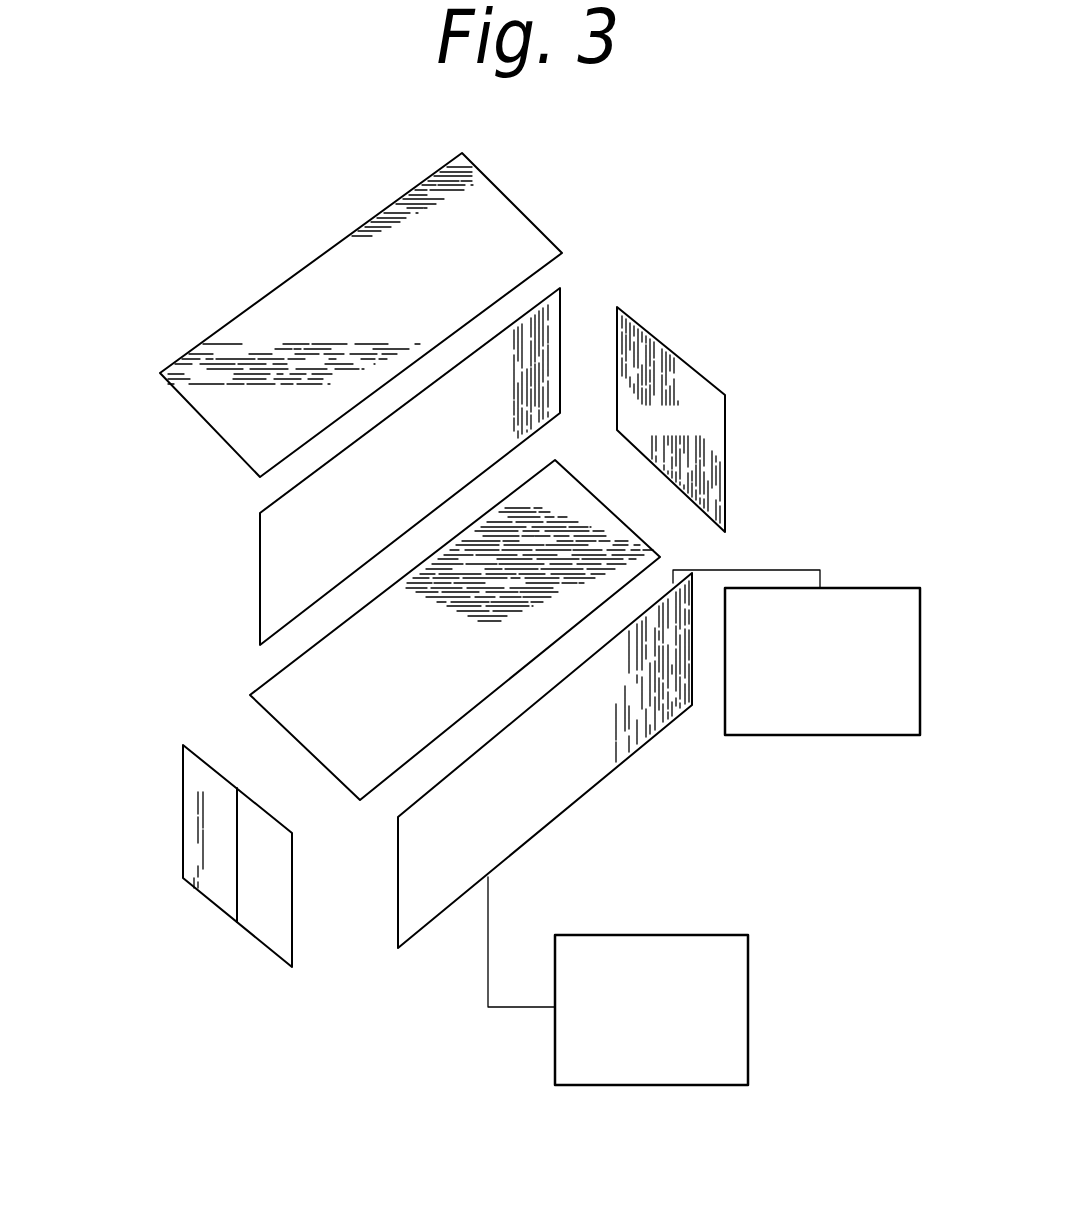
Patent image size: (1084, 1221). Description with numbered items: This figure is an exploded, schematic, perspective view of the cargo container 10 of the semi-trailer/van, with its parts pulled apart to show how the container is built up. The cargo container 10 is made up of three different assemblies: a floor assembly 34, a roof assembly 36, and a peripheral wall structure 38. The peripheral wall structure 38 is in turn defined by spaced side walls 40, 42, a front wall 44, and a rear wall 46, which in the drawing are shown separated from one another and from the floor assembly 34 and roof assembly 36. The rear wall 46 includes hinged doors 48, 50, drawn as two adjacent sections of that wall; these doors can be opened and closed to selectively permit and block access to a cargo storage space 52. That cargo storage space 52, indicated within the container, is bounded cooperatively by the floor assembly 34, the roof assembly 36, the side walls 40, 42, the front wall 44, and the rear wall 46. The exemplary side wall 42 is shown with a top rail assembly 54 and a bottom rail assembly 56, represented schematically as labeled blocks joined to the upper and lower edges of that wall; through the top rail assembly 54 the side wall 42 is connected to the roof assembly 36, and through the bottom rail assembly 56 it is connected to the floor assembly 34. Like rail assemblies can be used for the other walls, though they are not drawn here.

The cargo container 10 is at (696, 325).
The floor assembly 34 is at (455, 609).
The roof assembly 36 is at (387, 312).
The peripheral wall structure 38 is at (768, 500).
The side wall 40 is at (379, 487).
The side wall 42 is at (533, 793).
The front wall 44 is at (662, 436).
The rear wall 46 is at (213, 803).
The hinged door 48 is at (205, 852).
The hinged door 50 is at (258, 903).
The cargo storage space 52 is at (543, 565).
The top rail assembly 54 is at (814, 712).
The bottom rail assembly 56 is at (644, 1062).